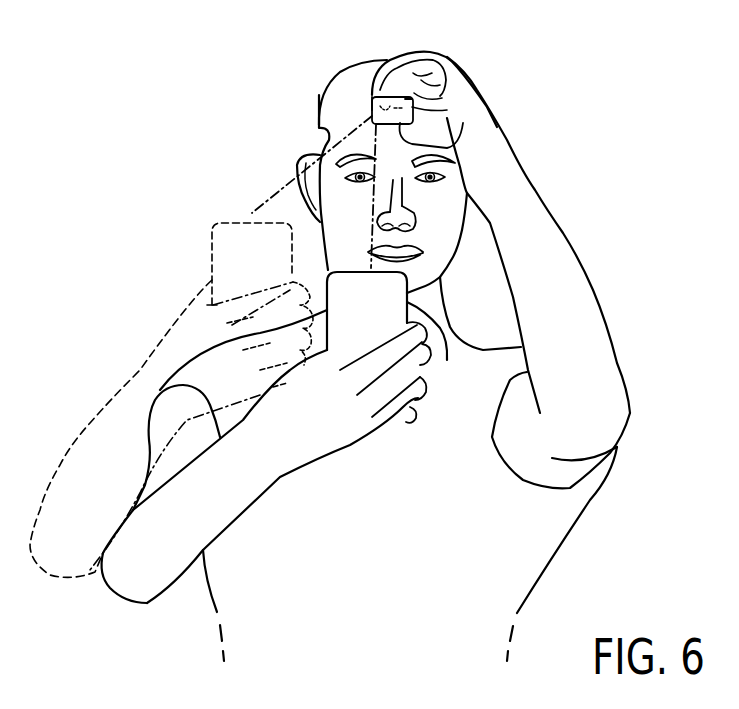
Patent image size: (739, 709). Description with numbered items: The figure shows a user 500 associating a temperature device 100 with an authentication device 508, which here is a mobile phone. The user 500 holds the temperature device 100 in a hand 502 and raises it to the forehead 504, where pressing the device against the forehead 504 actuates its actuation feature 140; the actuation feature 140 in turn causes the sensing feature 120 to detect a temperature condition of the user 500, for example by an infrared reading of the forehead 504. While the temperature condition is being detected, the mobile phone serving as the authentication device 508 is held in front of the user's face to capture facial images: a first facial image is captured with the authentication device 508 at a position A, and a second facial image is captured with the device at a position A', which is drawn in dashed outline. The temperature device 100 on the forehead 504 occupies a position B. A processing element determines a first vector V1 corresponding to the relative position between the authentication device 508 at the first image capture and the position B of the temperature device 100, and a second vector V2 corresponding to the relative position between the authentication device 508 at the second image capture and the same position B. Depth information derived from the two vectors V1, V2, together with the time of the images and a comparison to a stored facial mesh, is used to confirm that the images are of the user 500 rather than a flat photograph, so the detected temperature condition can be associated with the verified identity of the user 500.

The user 500 is at (224, 79).
The temperature device 100 is at (413, 108).
The sensing feature 120 is at (372, 102).
The actuation feature 140 is at (415, 100).
The hand 502 is at (500, 158).
The forehead 504 is at (340, 124).
The authentication device 508 is at (447, 360).
The position A is at (375, 423).
The position A' is at (171, 388).
The position B is at (372, 98).
The first vector V1 is at (372, 207).
The second vector V2 is at (263, 203).